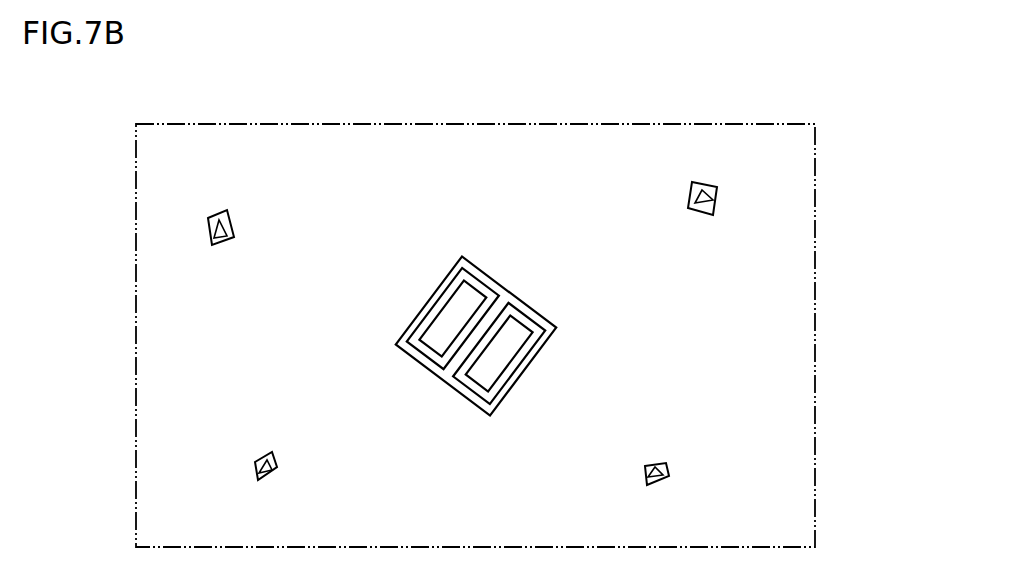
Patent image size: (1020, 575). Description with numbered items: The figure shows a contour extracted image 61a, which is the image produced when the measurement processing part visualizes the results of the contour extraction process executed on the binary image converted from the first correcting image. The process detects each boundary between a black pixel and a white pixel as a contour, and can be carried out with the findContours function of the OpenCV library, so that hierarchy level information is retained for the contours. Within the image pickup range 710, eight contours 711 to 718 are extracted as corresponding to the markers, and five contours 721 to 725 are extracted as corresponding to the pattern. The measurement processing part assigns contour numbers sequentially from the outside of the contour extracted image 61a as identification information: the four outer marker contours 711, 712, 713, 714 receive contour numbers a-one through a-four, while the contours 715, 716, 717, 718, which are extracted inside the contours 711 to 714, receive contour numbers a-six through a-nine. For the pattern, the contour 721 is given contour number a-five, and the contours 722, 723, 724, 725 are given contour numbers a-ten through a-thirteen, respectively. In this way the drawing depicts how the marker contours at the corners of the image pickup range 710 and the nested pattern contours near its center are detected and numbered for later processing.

The contour extracted image 61a is at (821, 111).
The image pickup range 710 is at (277, 123).
The contour 711 is at (142, 184).
The contour 712 is at (717, 200).
The contour 713 is at (256, 470).
The contour 714 is at (667, 470).
The contour 715 is at (209, 228).
The contour 716 is at (794, 205).
The contour 717 is at (163, 469).
The contour 718 is at (772, 409).
The contour 721 is at (430, 298).
The contour 722 is at (482, 280).
The contour 723 is at (527, 315).
The contour 724 is at (462, 288).
The contour 725 is at (520, 323).